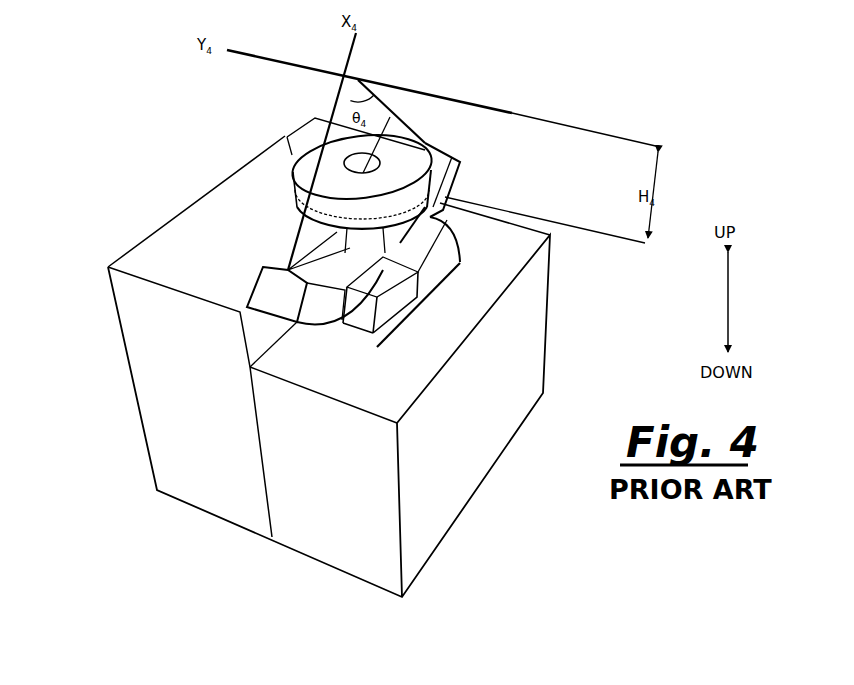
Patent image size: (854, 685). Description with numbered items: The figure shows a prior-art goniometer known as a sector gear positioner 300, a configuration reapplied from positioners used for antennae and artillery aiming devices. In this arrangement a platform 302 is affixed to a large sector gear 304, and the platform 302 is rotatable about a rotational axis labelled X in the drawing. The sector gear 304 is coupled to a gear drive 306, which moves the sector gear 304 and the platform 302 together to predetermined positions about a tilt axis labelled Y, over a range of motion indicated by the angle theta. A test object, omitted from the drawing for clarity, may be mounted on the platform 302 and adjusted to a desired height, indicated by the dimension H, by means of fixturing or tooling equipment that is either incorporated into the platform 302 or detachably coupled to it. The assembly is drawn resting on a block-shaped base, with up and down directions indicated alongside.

The sector gear positioner 300 is at (100, 172).
The platform 302 is at (285, 138).
The sector gear 304 is at (460, 162).
The gear drive 306 is at (456, 240).